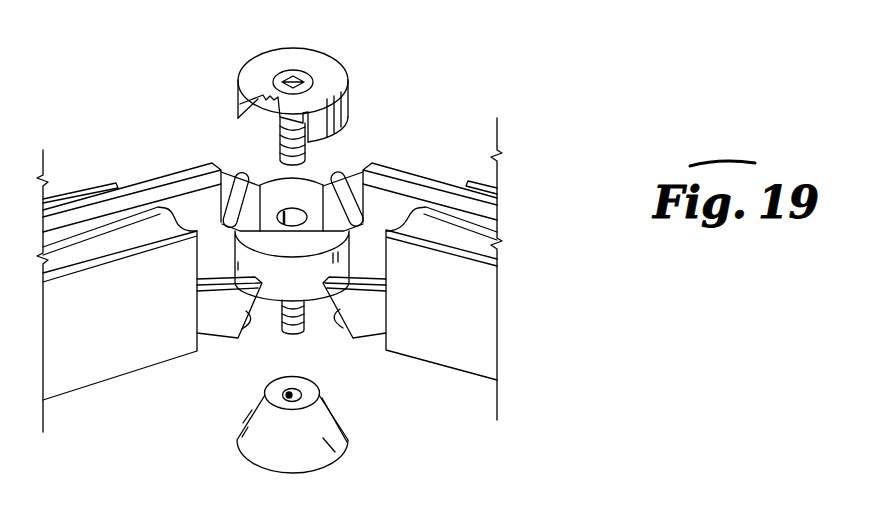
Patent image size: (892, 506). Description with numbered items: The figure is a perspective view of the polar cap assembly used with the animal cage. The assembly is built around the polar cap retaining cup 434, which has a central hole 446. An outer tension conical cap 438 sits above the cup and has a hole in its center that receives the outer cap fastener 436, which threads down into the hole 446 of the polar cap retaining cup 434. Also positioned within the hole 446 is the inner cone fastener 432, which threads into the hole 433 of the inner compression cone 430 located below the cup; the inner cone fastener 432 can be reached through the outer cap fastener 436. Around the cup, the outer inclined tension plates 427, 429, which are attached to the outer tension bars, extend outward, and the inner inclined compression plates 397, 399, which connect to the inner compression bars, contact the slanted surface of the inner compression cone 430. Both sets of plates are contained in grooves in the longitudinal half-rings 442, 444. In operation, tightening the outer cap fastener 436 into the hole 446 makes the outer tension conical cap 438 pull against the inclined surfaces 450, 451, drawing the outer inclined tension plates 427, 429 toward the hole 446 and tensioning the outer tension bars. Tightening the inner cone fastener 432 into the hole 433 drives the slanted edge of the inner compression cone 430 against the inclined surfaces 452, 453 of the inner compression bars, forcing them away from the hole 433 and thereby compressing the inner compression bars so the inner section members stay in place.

The outer inclined tension plate 429 is at (182, 173).
The outer inclined tension plate 427 is at (413, 178).
The longitudinal half-ring 444 is at (72, 372).
The longitudinal half-ring 442 is at (470, 355).
The outer tension conical cap 438 is at (262, 52).
The outer cap fastener 436 is at (303, 72).
The polar cap retaining cup 434 is at (307, 185).
The hole 446 is at (290, 212).
The inclined surface 450 is at (236, 182).
The inclined surface 451 is at (350, 178).
The inner inclined compression plate 399 is at (222, 284).
The inner inclined compression plate 397 is at (364, 283).
The inclined surface 452 is at (244, 318).
The inclined surface 453 is at (334, 312).
The inner cone fastener 432 is at (283, 332).
The inner compression cone 430 is at (240, 457).
The hole 433 is at (297, 393).